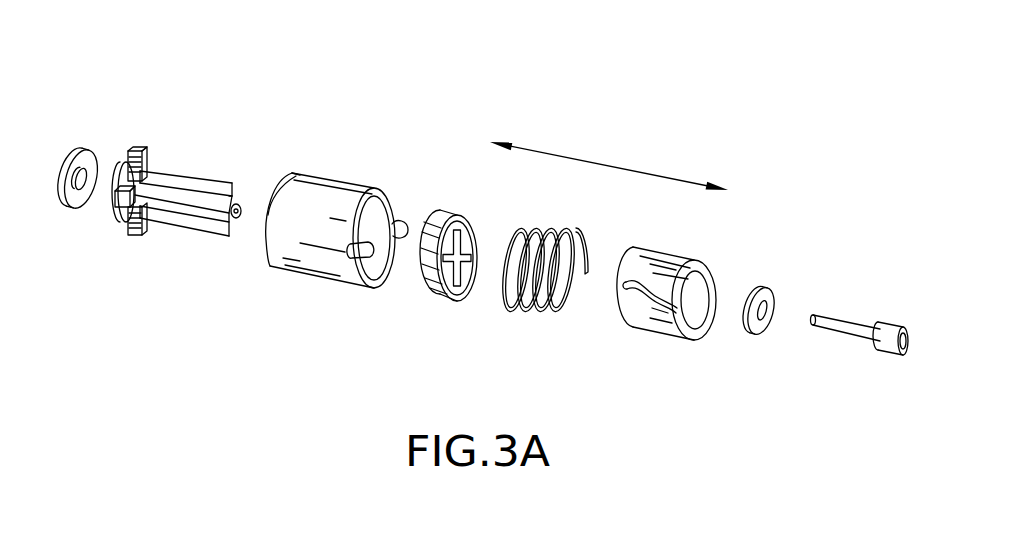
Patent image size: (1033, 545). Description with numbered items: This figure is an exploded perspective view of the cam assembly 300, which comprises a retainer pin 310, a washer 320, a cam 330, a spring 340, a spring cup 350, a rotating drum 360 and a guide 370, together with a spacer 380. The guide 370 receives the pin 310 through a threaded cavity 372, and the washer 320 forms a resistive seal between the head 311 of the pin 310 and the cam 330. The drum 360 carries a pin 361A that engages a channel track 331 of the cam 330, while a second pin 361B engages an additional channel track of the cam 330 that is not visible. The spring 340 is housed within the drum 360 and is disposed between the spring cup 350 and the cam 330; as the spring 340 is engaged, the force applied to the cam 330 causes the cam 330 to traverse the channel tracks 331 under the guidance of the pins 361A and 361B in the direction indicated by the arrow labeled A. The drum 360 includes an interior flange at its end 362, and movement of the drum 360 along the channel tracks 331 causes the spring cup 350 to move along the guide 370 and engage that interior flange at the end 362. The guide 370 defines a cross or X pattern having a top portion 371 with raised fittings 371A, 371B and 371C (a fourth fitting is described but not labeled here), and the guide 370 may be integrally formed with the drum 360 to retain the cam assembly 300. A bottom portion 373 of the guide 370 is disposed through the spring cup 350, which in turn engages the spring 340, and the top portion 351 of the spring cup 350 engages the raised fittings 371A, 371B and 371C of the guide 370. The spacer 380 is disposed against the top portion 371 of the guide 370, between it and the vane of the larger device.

The cam assembly 300 is at (485, 75).
The retainer pin 310 is at (813, 332).
The head of pin 311 is at (893, 318).
The washer 320 is at (763, 287).
The cam 330 is at (633, 328).
The channel track 331 is at (634, 280).
The spring 340 is at (525, 305).
The spring cup 350 is at (470, 212).
The top portion of spring cup 351 is at (418, 227).
The rotating drum 360 is at (297, 252).
The pin 361A is at (363, 282).
The pin 361B is at (403, 233).
The end of drum 362 is at (292, 172).
The guide 370 is at (177, 210).
The top portion of guide 371 is at (116, 150).
The raised fitting 371A is at (142, 150).
The raised fitting 371B is at (118, 208).
The raised fitting 371C is at (142, 233).
The threaded cavity 372 is at (240, 214).
The bottom portion of guide 373 is at (244, 180).
The spacer 380 is at (80, 148).